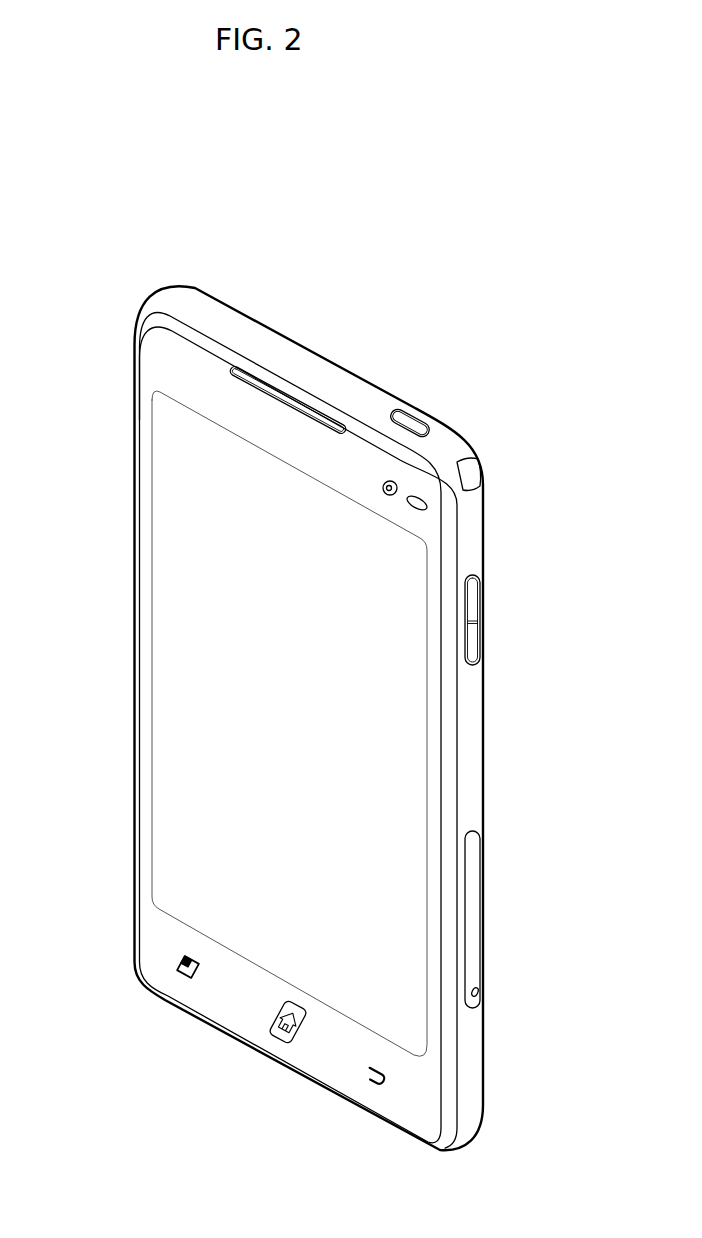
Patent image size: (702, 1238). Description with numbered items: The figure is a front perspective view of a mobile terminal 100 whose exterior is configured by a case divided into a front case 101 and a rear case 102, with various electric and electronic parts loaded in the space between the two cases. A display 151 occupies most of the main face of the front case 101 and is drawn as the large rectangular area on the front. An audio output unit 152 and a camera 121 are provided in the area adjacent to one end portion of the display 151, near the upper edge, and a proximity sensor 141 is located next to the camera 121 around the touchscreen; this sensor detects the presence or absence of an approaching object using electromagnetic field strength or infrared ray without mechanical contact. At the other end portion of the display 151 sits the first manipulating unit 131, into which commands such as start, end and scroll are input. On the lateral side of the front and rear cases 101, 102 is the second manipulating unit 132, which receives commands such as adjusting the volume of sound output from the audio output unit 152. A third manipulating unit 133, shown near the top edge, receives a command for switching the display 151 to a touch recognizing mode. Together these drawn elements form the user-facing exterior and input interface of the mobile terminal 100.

The mobile terminal 100 is at (104, 202).
The front case 101 is at (447, 1096).
The rear case 102 is at (478, 740).
The camera 121 is at (398, 489).
The first manipulating unit 131 is at (283, 1032).
The second manipulating unit 132 is at (476, 608).
The third manipulating unit 133 is at (410, 425).
The proximity sensor 141 is at (428, 507).
The display 151 is at (170, 686).
The audio output unit 152 is at (290, 398).